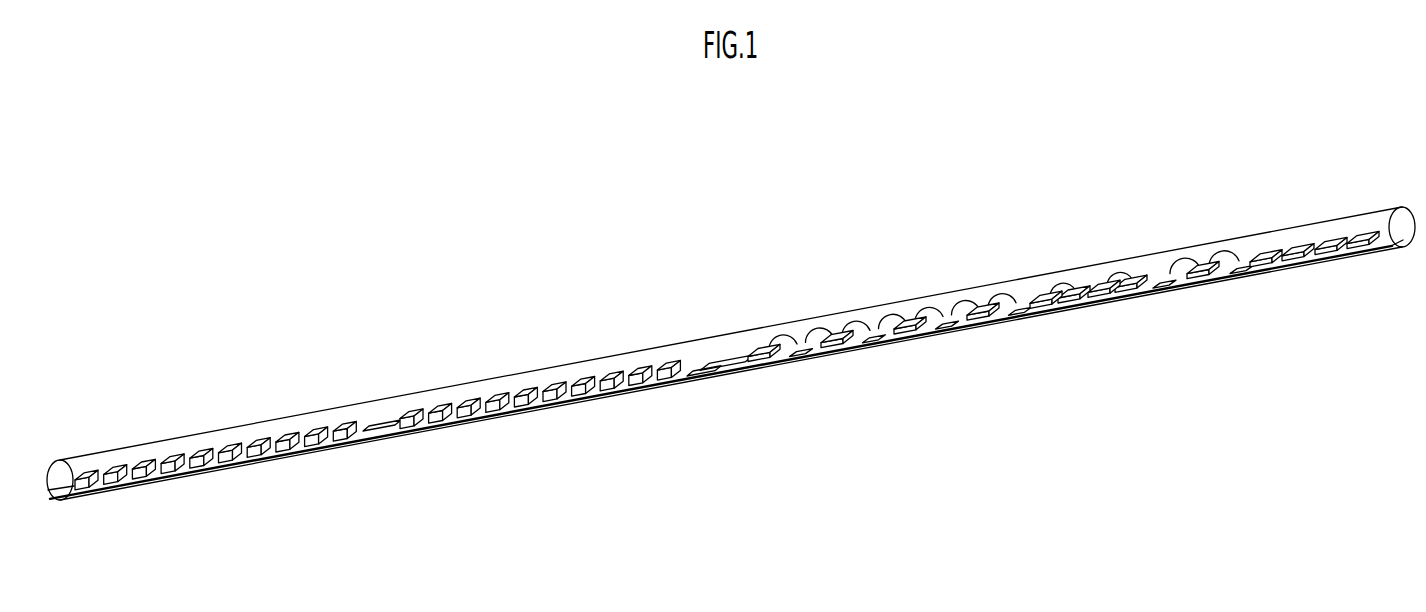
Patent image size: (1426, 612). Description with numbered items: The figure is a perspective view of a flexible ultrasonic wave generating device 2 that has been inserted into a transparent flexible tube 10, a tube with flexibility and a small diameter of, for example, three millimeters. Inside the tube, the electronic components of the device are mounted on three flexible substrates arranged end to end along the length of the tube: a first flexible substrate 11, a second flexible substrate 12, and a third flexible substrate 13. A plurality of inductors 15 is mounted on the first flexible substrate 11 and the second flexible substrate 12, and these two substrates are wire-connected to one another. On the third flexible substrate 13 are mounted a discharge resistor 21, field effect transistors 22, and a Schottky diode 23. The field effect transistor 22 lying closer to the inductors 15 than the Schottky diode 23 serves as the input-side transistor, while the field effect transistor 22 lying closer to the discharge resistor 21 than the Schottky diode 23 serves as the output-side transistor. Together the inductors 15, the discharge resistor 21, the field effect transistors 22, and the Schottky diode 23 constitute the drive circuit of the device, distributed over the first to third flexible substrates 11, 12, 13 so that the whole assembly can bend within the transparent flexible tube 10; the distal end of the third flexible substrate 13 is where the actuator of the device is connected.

The flexible ultrasonic wave generating device 2 is at (981, 197).
The transparent flexible tube 10 is at (716, 336).
The first flexible substrate 11 is at (72, 500).
The second flexible substrate 12 is at (384, 432).
The third flexible substrate 13 is at (708, 378).
The inductors 15 is at (90, 470).
The discharge resistor 21 is at (1266, 252).
The field effect transistor (FET) 22 is at (766, 345).
The Schottky diode (SBD) 23 is at (1046, 293).